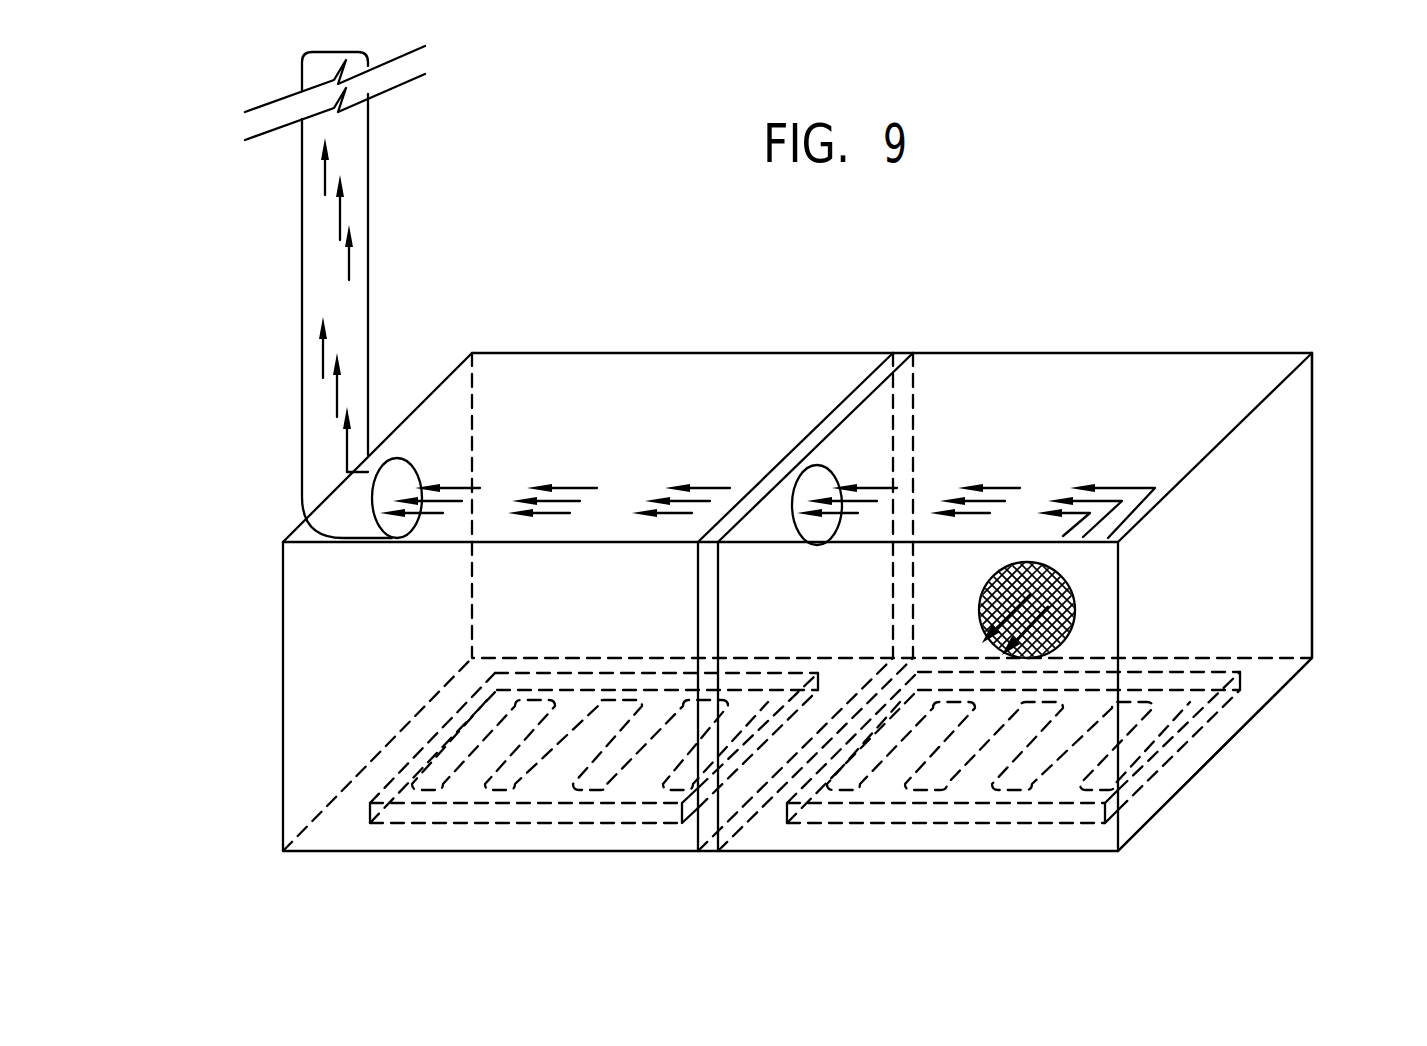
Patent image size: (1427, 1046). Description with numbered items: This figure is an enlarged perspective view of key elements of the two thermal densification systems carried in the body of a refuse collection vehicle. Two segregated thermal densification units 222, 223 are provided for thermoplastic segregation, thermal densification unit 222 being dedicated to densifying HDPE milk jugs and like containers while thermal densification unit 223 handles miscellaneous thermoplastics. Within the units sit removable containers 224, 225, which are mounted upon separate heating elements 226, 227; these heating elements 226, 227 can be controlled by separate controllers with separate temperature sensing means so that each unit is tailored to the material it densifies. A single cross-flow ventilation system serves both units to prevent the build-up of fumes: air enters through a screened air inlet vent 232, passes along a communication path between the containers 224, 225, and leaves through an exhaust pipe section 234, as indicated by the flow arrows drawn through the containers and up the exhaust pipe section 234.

The thermal densification unit 222 is at (244, 634).
The thermal densification unit 223 is at (1348, 546).
The removable container 224 is at (677, 365).
The removable container 225 is at (1148, 363).
The heating element 226 is at (457, 795).
The heating element 227 is at (878, 795).
The screened air inlet vent 232 is at (1068, 585).
The exhaust pipe section 234 is at (358, 228).